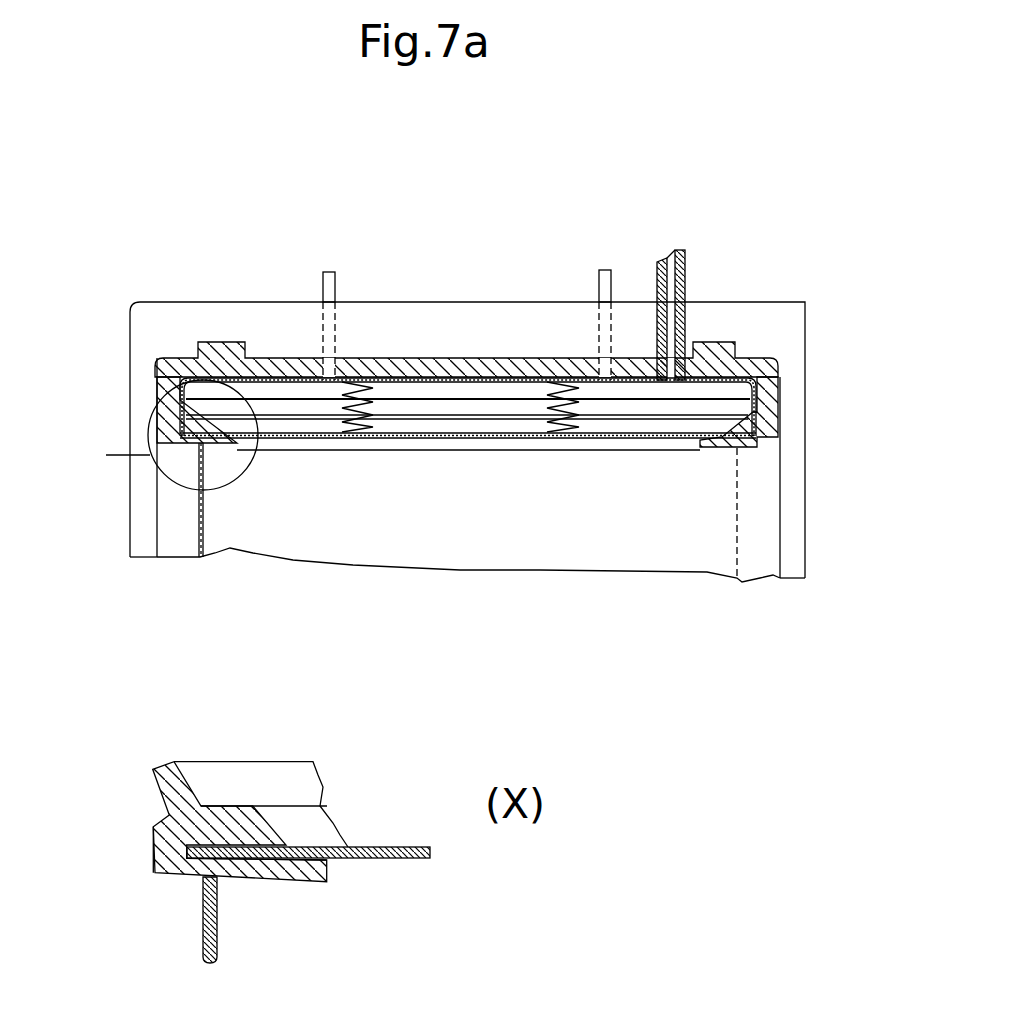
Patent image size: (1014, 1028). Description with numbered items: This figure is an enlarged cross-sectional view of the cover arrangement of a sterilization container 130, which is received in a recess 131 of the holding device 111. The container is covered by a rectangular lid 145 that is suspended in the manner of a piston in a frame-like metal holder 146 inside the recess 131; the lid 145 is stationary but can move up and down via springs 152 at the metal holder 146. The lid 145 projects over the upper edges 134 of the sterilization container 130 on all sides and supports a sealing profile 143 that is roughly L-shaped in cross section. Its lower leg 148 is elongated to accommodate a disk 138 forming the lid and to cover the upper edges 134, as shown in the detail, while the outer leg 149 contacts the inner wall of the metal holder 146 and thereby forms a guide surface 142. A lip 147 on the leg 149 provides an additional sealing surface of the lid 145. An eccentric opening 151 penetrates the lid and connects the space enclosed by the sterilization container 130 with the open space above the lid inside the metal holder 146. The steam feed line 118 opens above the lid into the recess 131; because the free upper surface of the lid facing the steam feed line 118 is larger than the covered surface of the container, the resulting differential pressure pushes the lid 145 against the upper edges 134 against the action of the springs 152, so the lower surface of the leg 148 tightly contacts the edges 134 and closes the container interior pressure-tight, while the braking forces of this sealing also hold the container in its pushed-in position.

The holding device 111 is at (450, 262).
The steam feed line 118 is at (683, 270).
The sterilization container 130 is at (375, 538).
The recess 131 is at (782, 477).
The upper edges 134 is at (212, 925).
The disk 138 is at (430, 433).
The guide surface 142 is at (153, 853).
The sealing profile 143 is at (758, 428).
The lid 145 is at (712, 488).
The metal holder 146 is at (496, 374).
The lip 147 is at (730, 395).
The lower leg 148 is at (310, 873).
The outer leg 149 is at (758, 415).
The eccentric opening 151 is at (298, 433).
The springs 152 is at (342, 392).